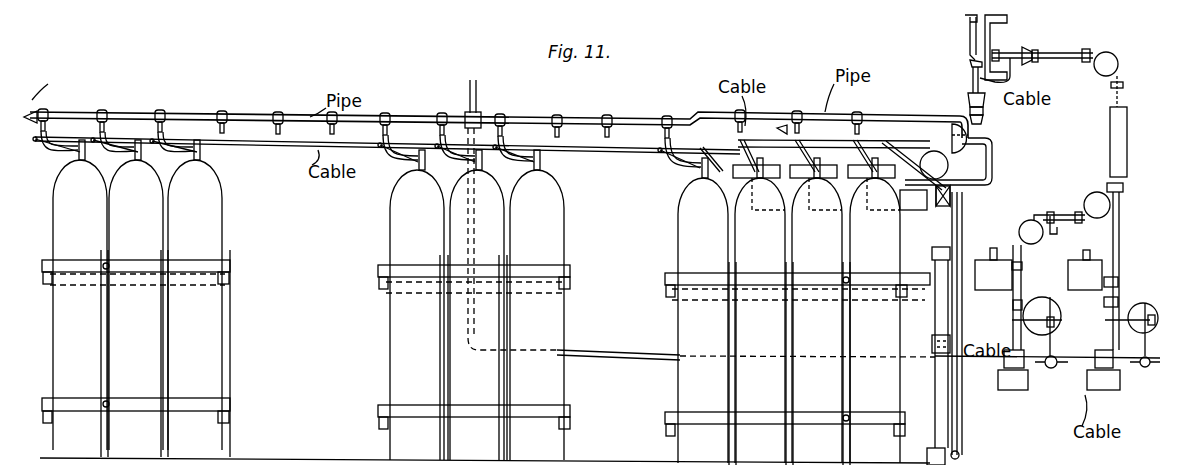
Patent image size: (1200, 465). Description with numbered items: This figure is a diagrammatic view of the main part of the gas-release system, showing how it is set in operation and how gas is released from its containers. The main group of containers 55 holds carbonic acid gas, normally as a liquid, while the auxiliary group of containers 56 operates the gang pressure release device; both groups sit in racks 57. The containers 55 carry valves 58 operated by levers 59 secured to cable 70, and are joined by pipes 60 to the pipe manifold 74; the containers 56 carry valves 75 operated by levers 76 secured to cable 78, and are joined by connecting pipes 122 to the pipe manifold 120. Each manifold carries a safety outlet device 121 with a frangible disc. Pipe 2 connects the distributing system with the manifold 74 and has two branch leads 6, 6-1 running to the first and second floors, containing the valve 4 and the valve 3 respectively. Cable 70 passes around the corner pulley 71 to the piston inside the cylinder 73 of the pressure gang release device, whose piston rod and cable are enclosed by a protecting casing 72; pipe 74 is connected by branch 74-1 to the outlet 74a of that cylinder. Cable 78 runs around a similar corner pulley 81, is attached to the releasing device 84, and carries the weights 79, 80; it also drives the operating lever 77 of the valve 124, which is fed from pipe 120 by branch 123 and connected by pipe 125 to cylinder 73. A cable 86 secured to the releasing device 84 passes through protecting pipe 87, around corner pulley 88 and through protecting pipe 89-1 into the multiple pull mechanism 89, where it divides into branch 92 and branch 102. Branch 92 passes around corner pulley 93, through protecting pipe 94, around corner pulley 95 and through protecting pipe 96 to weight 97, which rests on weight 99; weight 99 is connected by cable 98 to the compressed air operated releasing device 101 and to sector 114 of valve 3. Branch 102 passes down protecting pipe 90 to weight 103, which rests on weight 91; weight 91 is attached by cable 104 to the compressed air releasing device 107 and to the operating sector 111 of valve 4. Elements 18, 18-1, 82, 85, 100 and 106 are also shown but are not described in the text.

The pipe 2 is at (615, 360).
The valve 3 is at (1072, 380).
The valve 4 is at (1158, 318).
The branch lead 6 is at (1148, 347).
The branch lead 6-1 is at (1062, 300).
The stem 18 is at (1091, 262).
The stem 18-1 is at (996, 265).
The main group of containers 55 is at (168, 349).
The auxiliary group of containers 56 is at (855, 447).
The racks 57 is at (236, 380).
The valves 58 is at (84, 158).
The levers 59 is at (70, 160).
The pipes 60 is at (142, 133).
The cable 70 is at (597, 160).
The corner pulley 71 is at (948, 165).
The protecting casing 72 is at (935, 315).
The cylinder 73 is at (935, 401).
The pipe manifold 74 is at (138, 114).
The outlet 74a is at (478, 95).
The branch 74-1 is at (957, 420).
The valves 75 is at (764, 195).
The levers 76 is at (706, 172).
The operating lever 77 is at (963, 212).
The cable 78 is at (782, 126).
The weight 79 is at (738, 222).
The weight 80 is at (886, 224).
The corner pulley 81 is at (980, 140).
The lever 82 is at (972, 66).
The releasing device 84 is at (1008, 22).
The rod 85 is at (1000, 54).
The cable 86 is at (1016, 60).
The protecting pipe 87 is at (1082, 50).
The corner pulley 88 is at (1119, 60).
The multiple pull mechanism 89 is at (1128, 140).
The protecting pipe 89-1 is at (1124, 96).
The protecting pipe 90 is at (1121, 236).
The weight 91 is at (1104, 390).
The branch 92 is at (1106, 186).
The corner pulley 93 is at (1121, 207).
The protecting pipe 94 is at (1084, 205).
The corner pulley 95 is at (1043, 235).
The protecting pipe 96 is at (1023, 263).
The weight 97 is at (1025, 390).
The cable 98 is at (1012, 337).
The weight 99 is at (1010, 390).
The rod 100 is at (1023, 281).
The compressed air operated releasing device 101 is at (988, 286).
The branch 102 is at (1150, 370).
The weight 103 is at (1118, 378).
The cable 104 is at (1103, 314).
The fitting 106 is at (1120, 272).
The compressed air releasing device 107 is at (1086, 275).
The operating sector 111 is at (1145, 303).
The sector 114 is at (1037, 326).
The pipe manifold 120 is at (873, 117).
The safety outlet device 121 is at (28, 112).
The connecting pipes 122 is at (872, 252).
The branch 123 is at (994, 178).
The valve 124 is at (965, 193).
The pipe 125 is at (963, 234).